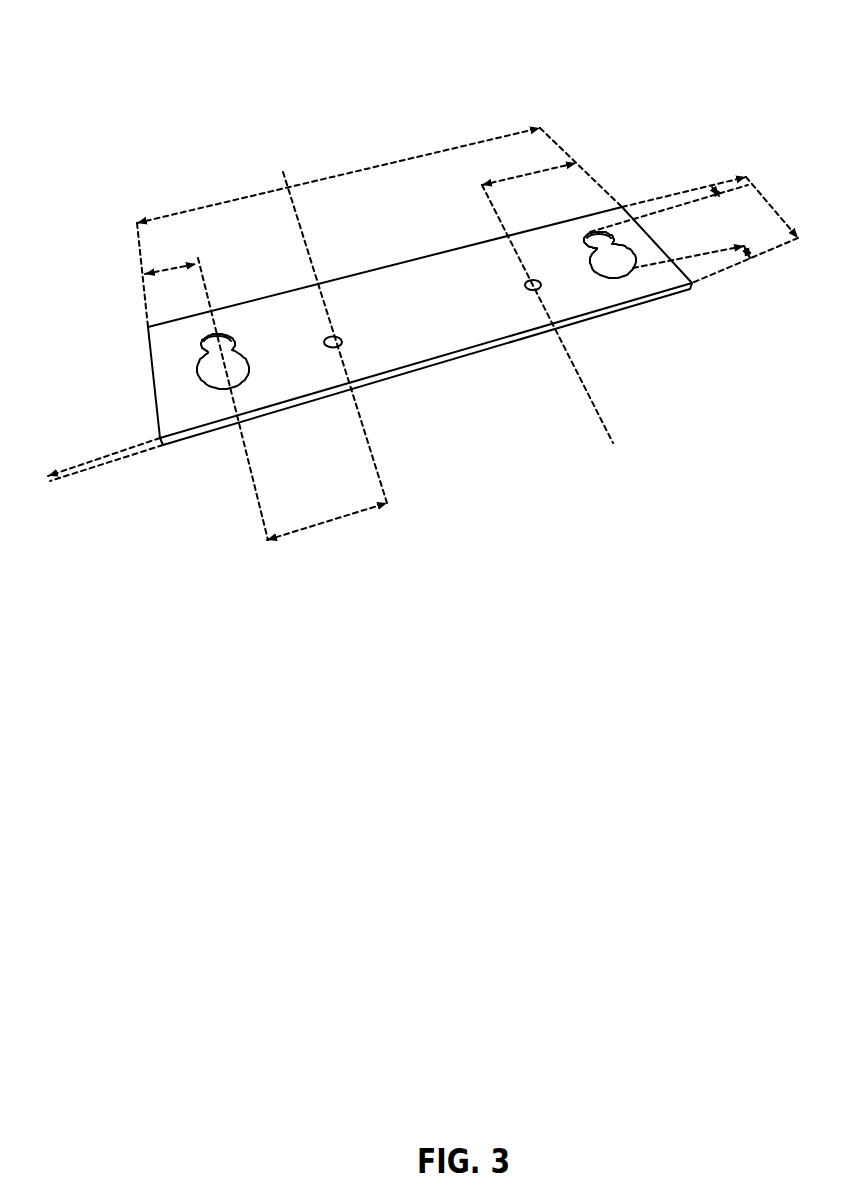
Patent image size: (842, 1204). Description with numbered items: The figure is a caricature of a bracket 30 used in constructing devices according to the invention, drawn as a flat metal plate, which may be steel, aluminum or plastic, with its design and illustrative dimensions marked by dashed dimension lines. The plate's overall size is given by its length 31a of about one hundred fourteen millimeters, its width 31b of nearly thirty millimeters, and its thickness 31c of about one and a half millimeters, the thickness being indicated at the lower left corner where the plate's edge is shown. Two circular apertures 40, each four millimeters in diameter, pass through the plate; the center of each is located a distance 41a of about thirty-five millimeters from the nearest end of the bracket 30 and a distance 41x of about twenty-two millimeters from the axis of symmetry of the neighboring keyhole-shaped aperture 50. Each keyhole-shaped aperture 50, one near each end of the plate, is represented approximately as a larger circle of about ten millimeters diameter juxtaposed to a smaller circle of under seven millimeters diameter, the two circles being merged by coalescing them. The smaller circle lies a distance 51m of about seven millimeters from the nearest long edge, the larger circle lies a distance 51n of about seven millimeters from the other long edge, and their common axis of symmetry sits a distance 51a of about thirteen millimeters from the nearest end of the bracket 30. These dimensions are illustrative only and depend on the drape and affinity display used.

The bracket 30 is at (428, 315).
The bracket length dimension 31a is at (373, 165).
The bracket width dimension 31b is at (770, 203).
The bracket thickness dimension 31c is at (47, 478).
The circular apertures 40 is at (350, 350).
The circular aperture end distance dimension 41a is at (518, 166).
The circular aperture to keyhole axis dimension 41x is at (332, 533).
The keyhole-shaped aperture 50 is at (612, 285).
The keyhole axis end distance dimension 51a is at (170, 263).
The smaller circle edge distance dimension 51m is at (713, 187).
The larger circle edge distance dimension 51n is at (740, 255).